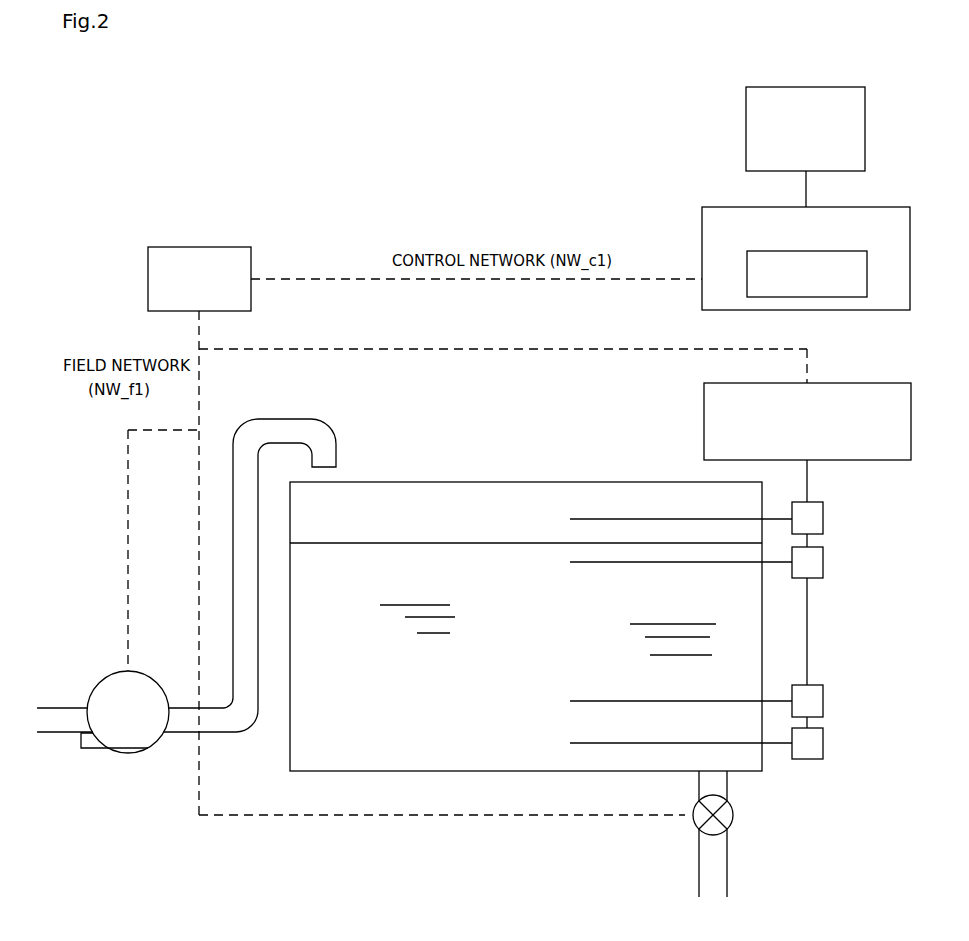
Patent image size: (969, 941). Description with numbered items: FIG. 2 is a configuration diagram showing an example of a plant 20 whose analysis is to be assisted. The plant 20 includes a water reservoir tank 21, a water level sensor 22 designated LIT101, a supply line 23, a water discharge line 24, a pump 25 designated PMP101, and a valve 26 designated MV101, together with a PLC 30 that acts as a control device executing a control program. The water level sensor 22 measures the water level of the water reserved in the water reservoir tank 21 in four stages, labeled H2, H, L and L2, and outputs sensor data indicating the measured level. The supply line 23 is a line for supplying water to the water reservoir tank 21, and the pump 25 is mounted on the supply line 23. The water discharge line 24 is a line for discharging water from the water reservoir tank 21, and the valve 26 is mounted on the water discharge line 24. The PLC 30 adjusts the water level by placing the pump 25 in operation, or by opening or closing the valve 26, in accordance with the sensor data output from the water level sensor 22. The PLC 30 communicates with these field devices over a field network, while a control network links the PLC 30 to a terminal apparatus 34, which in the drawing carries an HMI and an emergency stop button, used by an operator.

The plant 20 is at (490, 409).
The water reservoir tank 21 is at (558, 482).
The water level sensor 22 is at (860, 383).
The supply line 23 is at (325, 422).
The water discharge line 24 is at (698, 878).
The pump 25 is at (146, 673).
The valve 26 is at (695, 808).
The PLC 30 is at (232, 247).
The terminal apparatus 34 is at (873, 207).